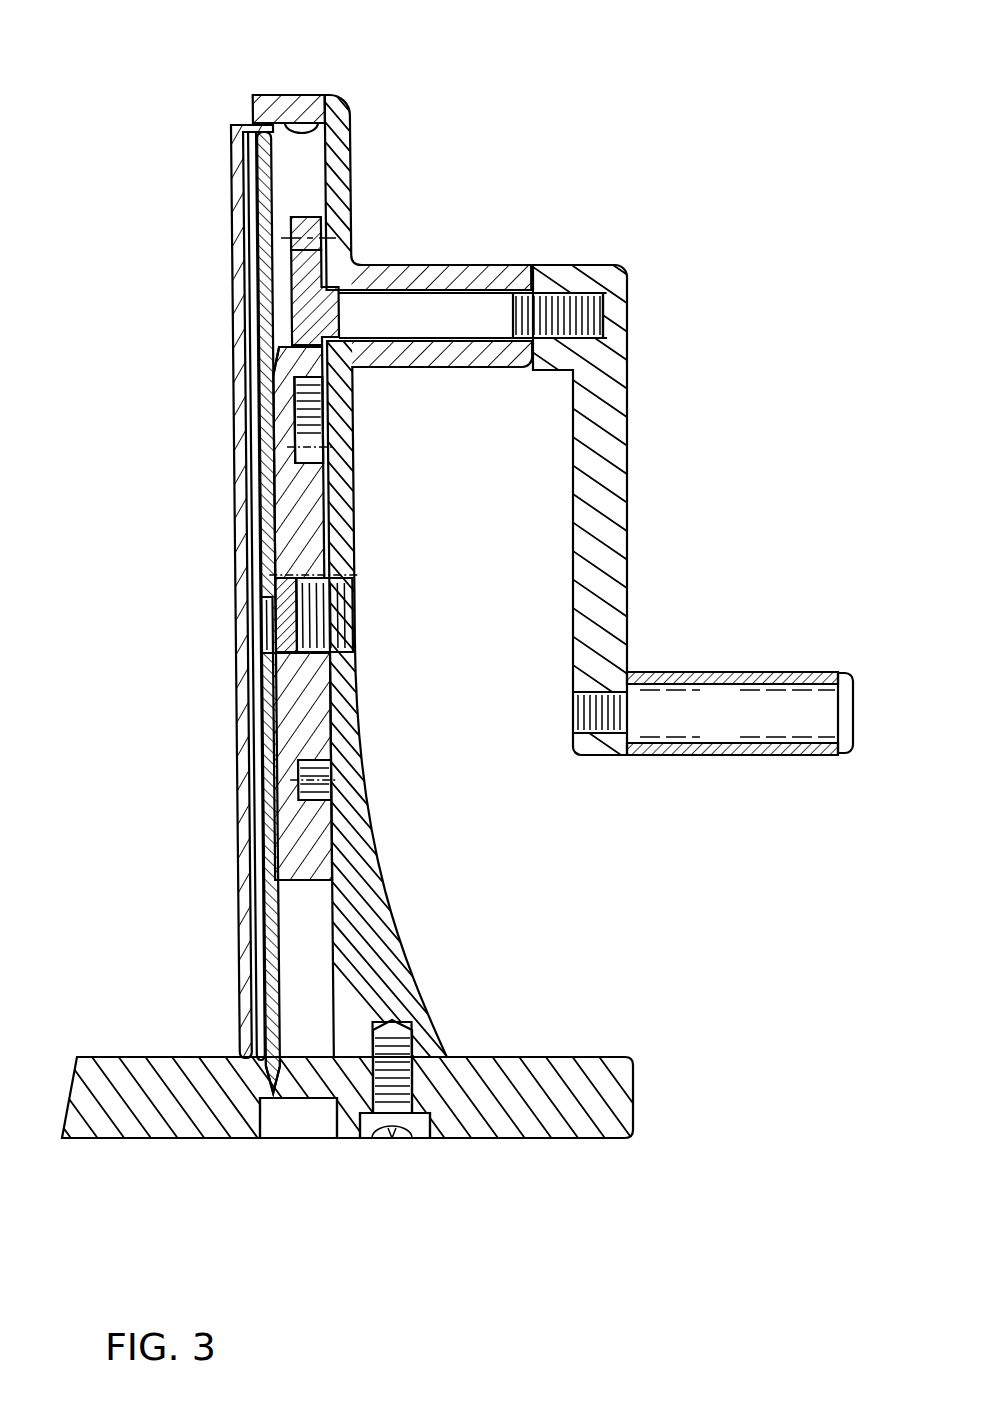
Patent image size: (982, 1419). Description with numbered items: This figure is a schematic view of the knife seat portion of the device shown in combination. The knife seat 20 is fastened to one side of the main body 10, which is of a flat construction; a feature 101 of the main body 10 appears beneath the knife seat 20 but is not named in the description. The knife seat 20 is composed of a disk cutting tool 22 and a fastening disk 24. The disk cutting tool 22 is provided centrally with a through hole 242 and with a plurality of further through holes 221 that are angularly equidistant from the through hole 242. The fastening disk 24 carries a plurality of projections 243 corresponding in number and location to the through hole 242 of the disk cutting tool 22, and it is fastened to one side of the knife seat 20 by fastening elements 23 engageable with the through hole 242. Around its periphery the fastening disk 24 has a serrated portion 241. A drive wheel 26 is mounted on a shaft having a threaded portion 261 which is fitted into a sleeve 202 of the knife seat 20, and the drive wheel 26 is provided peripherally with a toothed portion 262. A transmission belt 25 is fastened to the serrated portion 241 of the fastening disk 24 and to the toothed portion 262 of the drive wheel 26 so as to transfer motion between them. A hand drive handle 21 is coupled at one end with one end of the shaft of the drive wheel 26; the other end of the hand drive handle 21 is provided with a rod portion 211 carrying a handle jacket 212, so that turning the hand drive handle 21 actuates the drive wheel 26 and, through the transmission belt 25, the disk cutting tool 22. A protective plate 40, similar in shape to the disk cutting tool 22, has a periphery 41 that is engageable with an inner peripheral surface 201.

The main body 10 is at (557, 1070).
The hole in base 101 is at (275, 1132).
The knife seat 20 is at (351, 132).
The inner peripheral surface 201 is at (318, 98).
The sleeve 202 is at (481, 264).
The hand drive handle 21 is at (626, 451).
The rod portion 211 is at (812, 690).
The handle jacket 212 is at (725, 673).
The disk cutting tool 22 is at (263, 240).
The through holes 221 is at (270, 856).
The fastening elements 23 is at (262, 606).
The fastening disk 24 is at (283, 498).
The serrated portion 241 is at (330, 778).
The through hole 242 is at (350, 626).
The projections 243 is at (266, 376).
The transmission belt 25 is at (310, 420).
The drive wheel 26 is at (353, 382).
The threaded portion of bolt 261 is at (476, 326).
The toothed portion 262 is at (314, 236).
The protective plate 40 is at (236, 182).
The periphery 41 is at (250, 124).